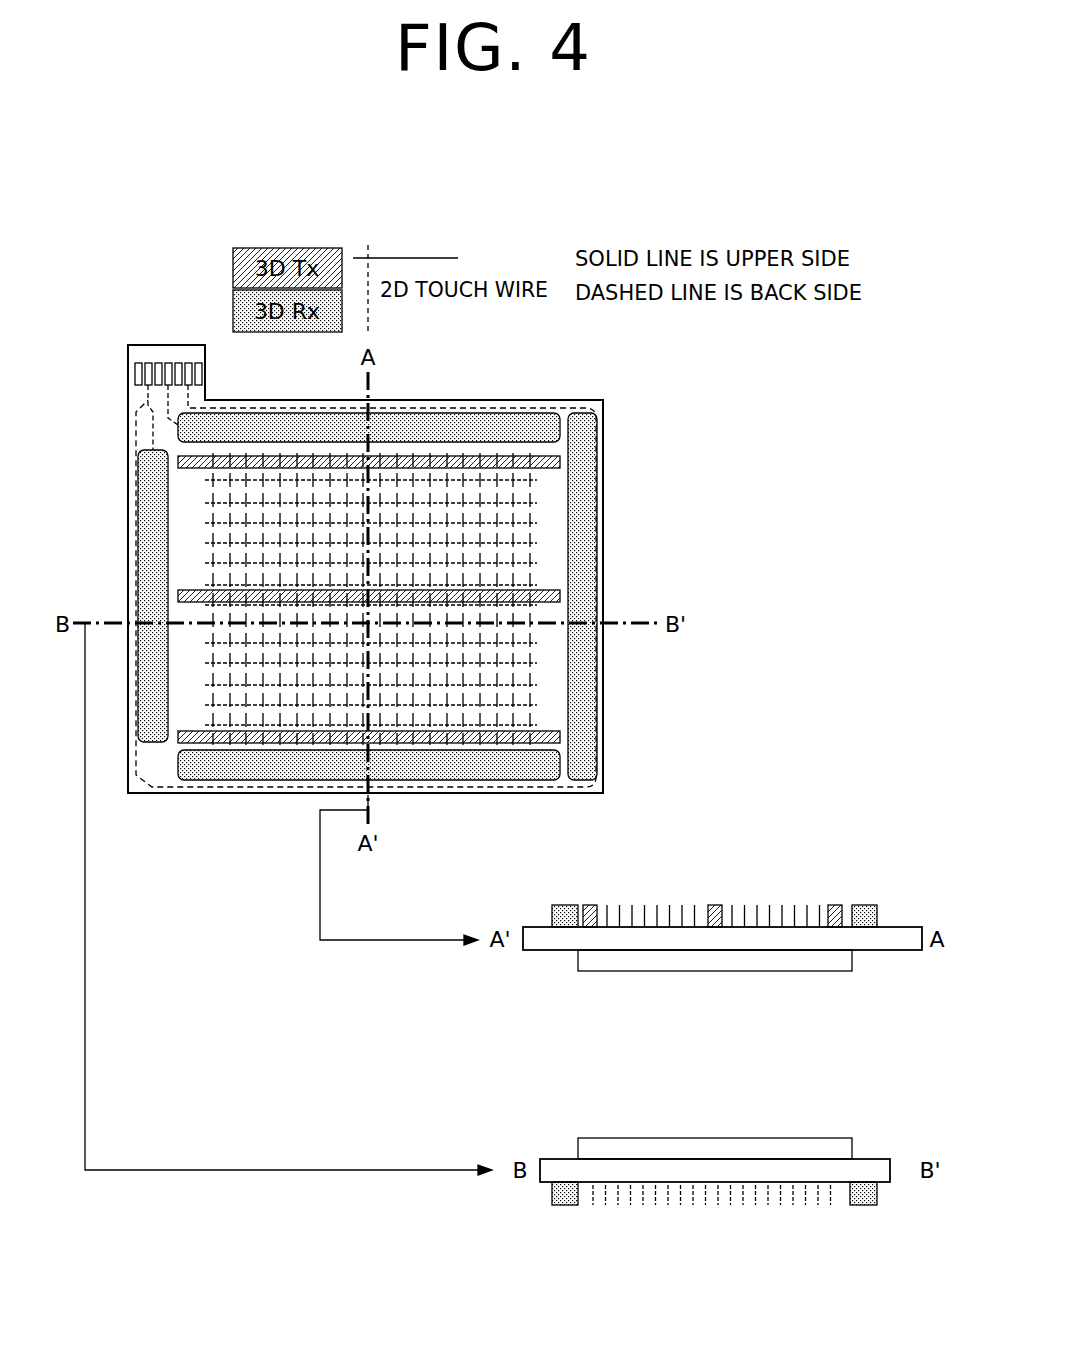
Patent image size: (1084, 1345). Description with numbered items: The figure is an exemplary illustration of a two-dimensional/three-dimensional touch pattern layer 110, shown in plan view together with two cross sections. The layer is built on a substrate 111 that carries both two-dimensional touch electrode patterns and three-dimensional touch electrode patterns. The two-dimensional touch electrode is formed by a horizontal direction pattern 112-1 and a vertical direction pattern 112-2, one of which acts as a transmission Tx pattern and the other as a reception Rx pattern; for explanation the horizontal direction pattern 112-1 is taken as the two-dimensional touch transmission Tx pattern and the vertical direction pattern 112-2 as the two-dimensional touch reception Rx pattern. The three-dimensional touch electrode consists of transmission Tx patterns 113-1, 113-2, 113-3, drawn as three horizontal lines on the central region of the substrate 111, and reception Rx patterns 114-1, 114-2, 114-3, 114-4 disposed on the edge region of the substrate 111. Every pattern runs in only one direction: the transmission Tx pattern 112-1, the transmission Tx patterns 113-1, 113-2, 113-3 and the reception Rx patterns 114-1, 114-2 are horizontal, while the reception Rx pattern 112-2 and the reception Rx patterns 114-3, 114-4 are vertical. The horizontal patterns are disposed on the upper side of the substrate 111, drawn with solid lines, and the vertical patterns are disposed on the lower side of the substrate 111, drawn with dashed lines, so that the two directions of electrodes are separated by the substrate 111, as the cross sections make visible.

The 2D/3D touch pattern layer 110 is at (445, 160).
The substrate 111 is at (605, 406).
The horizontal direction pattern of the 2D touch electrode 112-1 is at (405, 258).
The vertical direction pattern of the 2D touch electrode 112-2 is at (370, 320).
The transmission Tx pattern of the 3D touch electrode 113-1 is at (560, 461).
The transmission Tx pattern of the 3D touch electrode 113-2 is at (560, 595).
The transmission Tx pattern of the 3D touch electrode 113-3 is at (560, 736).
The reception Rx pattern of the 3D touch electrode 114-1 is at (495, 413).
The reception Rx pattern of the 3D touch electrode 114-2 is at (500, 781).
The reception Rx pattern of the 3D touch electrode 114-3 is at (597, 531).
The reception Rx pattern of the 3D touch electrode 114-4 is at (138, 534).